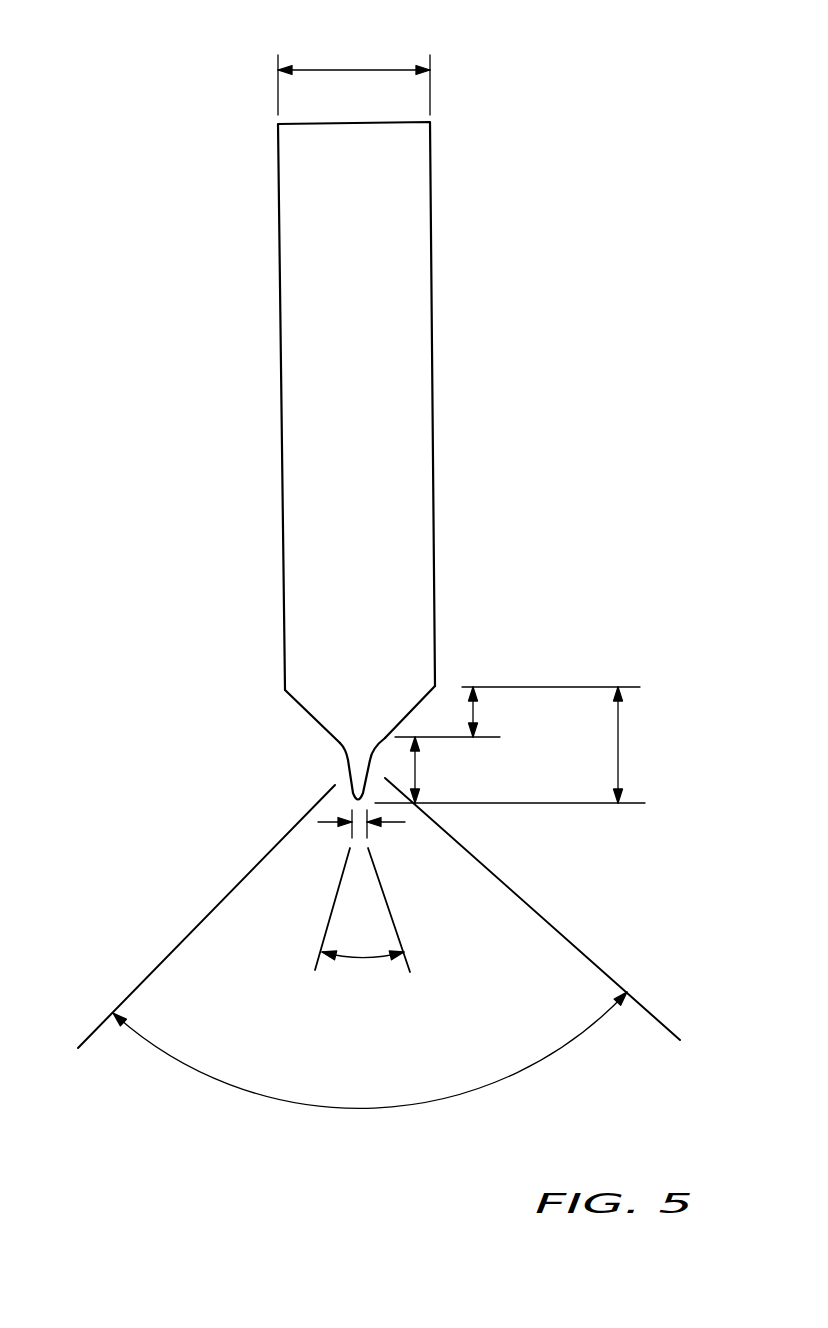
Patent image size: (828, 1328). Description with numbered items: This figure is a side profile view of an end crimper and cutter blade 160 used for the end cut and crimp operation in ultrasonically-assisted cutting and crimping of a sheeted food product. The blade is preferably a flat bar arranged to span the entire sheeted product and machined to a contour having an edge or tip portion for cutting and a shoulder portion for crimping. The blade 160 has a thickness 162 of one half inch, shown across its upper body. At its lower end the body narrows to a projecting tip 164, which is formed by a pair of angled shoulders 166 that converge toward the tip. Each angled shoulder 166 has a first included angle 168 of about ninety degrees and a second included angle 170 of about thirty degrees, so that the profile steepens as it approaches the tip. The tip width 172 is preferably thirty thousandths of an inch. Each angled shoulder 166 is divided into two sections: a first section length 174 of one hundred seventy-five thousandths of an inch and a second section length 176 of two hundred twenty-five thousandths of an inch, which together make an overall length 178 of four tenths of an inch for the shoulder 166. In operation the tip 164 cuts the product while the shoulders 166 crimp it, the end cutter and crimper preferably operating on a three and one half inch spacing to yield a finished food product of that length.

The end crimper and cutter blade 160 is at (363, 461).
The thickness 162 is at (358, 68).
The projecting tip 164 is at (290, 765).
The angled shoulders 166 is at (298, 703).
The first included angle 168 is at (358, 1108).
The second included angle 170 is at (360, 956).
The tip width 172 is at (398, 822).
The first section length 174 is at (476, 707).
The second section length 176 is at (418, 766).
The overall length 178 is at (621, 740).